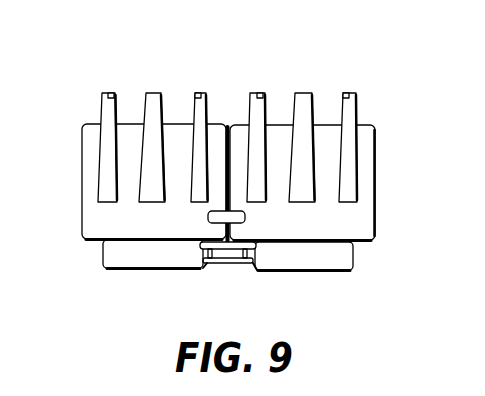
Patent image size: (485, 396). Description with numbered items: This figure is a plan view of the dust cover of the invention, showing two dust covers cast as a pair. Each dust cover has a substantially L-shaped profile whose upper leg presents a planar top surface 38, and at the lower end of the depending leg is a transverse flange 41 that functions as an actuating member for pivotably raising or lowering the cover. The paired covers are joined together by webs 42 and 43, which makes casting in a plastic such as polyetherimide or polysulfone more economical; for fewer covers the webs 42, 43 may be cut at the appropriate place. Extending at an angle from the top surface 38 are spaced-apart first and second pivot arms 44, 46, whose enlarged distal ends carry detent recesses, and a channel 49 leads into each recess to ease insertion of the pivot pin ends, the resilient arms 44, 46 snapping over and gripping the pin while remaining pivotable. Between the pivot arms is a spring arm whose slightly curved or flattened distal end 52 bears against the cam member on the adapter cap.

The planar top surface 38 is at (96, 220).
The transverse flange 41 is at (150, 265).
The web 42 is at (246, 217).
The web 43 is at (226, 262).
The first pivot arm 44 is at (106, 160).
The second pivot arm 46 is at (197, 116).
The channel 49 is at (110, 92).
The distal end of spring arm 52 is at (151, 92).